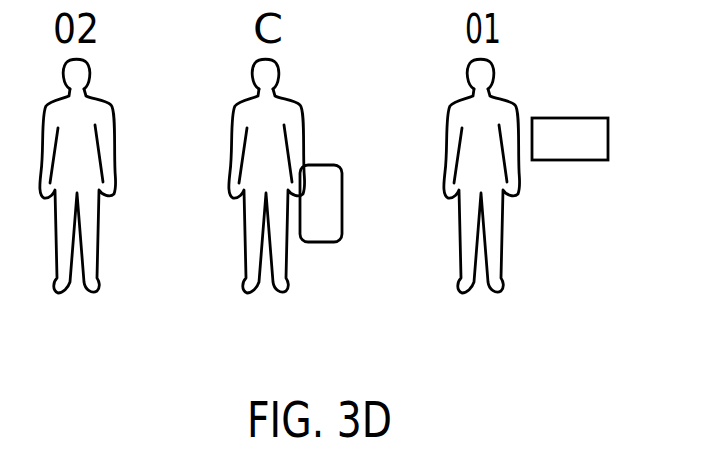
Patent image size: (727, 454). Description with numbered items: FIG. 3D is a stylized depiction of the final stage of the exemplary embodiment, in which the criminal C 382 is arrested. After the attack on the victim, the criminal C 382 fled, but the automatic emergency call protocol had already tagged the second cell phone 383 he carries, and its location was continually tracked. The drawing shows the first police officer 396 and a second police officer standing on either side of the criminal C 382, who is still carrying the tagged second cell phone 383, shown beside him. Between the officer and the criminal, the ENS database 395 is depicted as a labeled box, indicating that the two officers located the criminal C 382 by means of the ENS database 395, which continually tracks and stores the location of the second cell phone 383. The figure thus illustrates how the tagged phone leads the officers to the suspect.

The police officer 396 is at (90, 250).
The criminal 382 is at (285, 257).
The cell phone 2 383 is at (332, 165).
The ENS database 395 is at (580, 118).